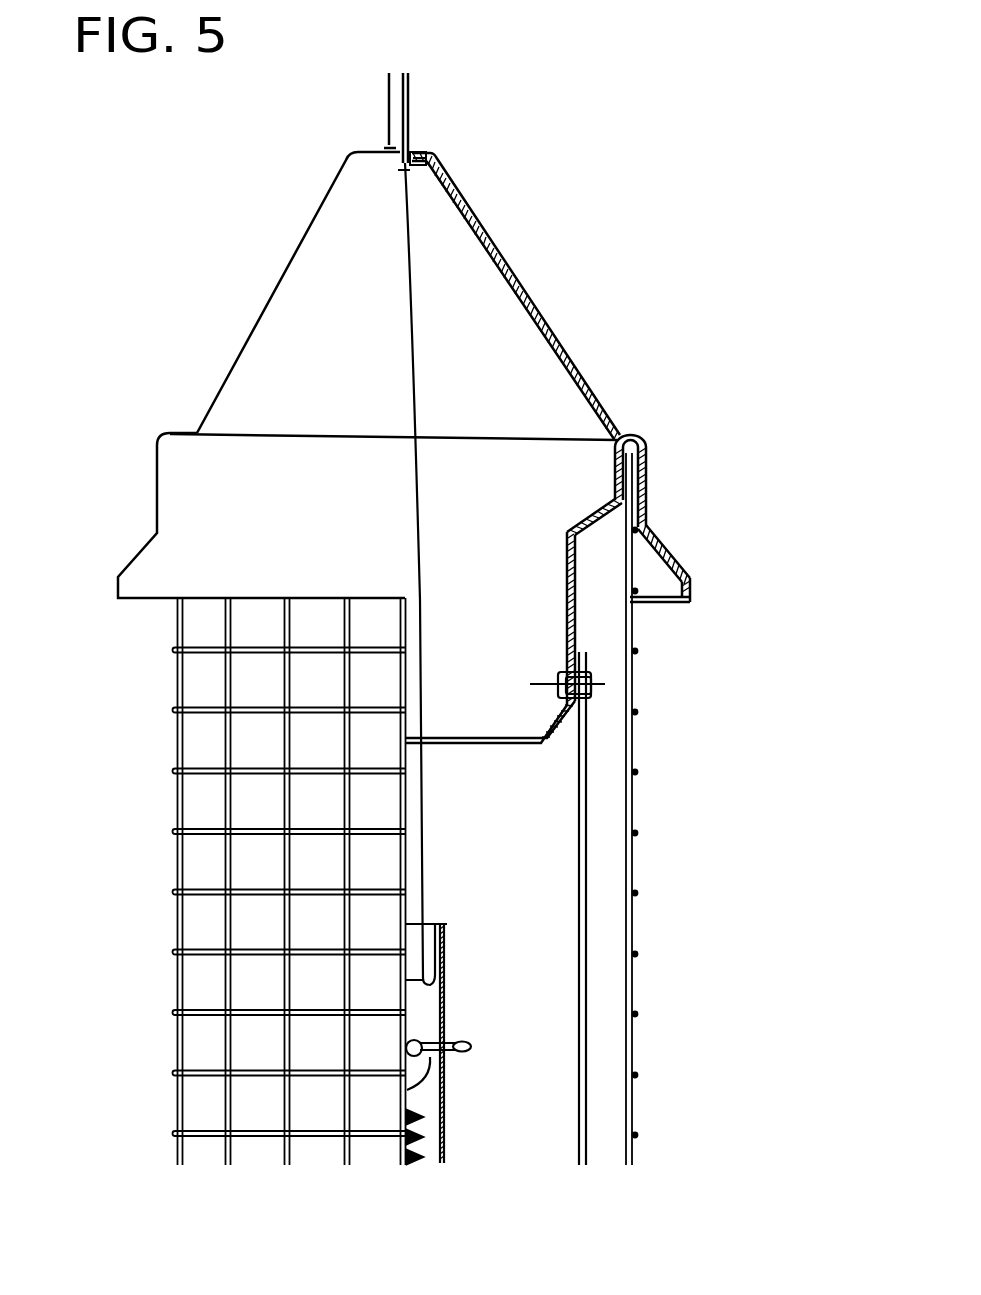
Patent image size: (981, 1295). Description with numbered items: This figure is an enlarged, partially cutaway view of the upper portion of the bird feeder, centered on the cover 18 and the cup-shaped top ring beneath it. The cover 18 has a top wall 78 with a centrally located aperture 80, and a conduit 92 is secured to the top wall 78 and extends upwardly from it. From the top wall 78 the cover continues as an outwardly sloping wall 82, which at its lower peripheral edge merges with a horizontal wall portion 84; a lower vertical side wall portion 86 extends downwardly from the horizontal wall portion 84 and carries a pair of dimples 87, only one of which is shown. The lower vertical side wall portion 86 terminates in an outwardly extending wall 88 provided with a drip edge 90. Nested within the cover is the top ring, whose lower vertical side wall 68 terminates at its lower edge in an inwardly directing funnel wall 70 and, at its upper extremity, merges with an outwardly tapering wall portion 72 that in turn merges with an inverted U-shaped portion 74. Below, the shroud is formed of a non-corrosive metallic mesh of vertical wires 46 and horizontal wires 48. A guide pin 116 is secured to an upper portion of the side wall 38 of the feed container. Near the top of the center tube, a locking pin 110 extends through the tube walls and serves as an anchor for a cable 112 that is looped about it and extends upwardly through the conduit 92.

The cover 18 is at (247, 227).
The conduit 92 is at (388, 97).
The top wall 78 is at (432, 152).
The aperture 80 is at (418, 190).
The outwardly sloping wall 82 is at (523, 270).
The horizontal wall portion 84 is at (630, 436).
The inverted U-shaped portion 74 is at (592, 472).
The lower vertical side wall portion 86 is at (648, 470).
The dimple 87 is at (648, 524).
The outwardly extending wall 88 is at (678, 562).
The drip edge 90 is at (688, 598).
The outwardly tapering wall portion 72 is at (578, 528).
The lower vertical side wall 68 is at (576, 630).
The funnel wall 70 is at (566, 740).
The guide pin 116 is at (595, 685).
The side wall 38 is at (586, 793).
The vertical wire 46 is at (635, 898).
The horizontal wire 48 is at (636, 852).
The cable 112 is at (426, 862).
The locking pin 110 is at (465, 1043).